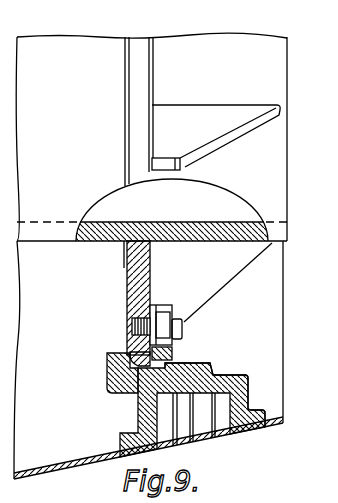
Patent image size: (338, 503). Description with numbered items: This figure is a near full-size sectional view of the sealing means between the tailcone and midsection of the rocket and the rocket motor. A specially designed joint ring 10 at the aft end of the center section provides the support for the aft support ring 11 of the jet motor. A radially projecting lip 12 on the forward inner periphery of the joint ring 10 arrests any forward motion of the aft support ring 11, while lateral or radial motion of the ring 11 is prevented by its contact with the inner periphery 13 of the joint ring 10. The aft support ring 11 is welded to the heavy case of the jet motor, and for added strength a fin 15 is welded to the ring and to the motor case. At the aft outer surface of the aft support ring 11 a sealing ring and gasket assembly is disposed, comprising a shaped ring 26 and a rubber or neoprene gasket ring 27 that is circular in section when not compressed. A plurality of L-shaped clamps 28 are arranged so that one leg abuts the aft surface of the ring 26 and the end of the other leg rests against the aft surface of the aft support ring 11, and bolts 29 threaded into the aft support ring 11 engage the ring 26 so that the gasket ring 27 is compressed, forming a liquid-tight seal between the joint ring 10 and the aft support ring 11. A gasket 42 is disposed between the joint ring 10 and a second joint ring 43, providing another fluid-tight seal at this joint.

The joint ring 10 is at (112, 388).
The aft support ring 11 is at (127, 280).
The radially projecting lip 12 is at (108, 362).
The inner periphery 13 is at (186, 410).
The fin 15 is at (221, 113).
The ring 26 is at (170, 354).
The gasket ring 27 is at (129, 352).
The bolt 28 is at (158, 304).
The bolt 29 is at (182, 324).
The gasket 42 is at (207, 366).
The joint ring 43 is at (245, 383).